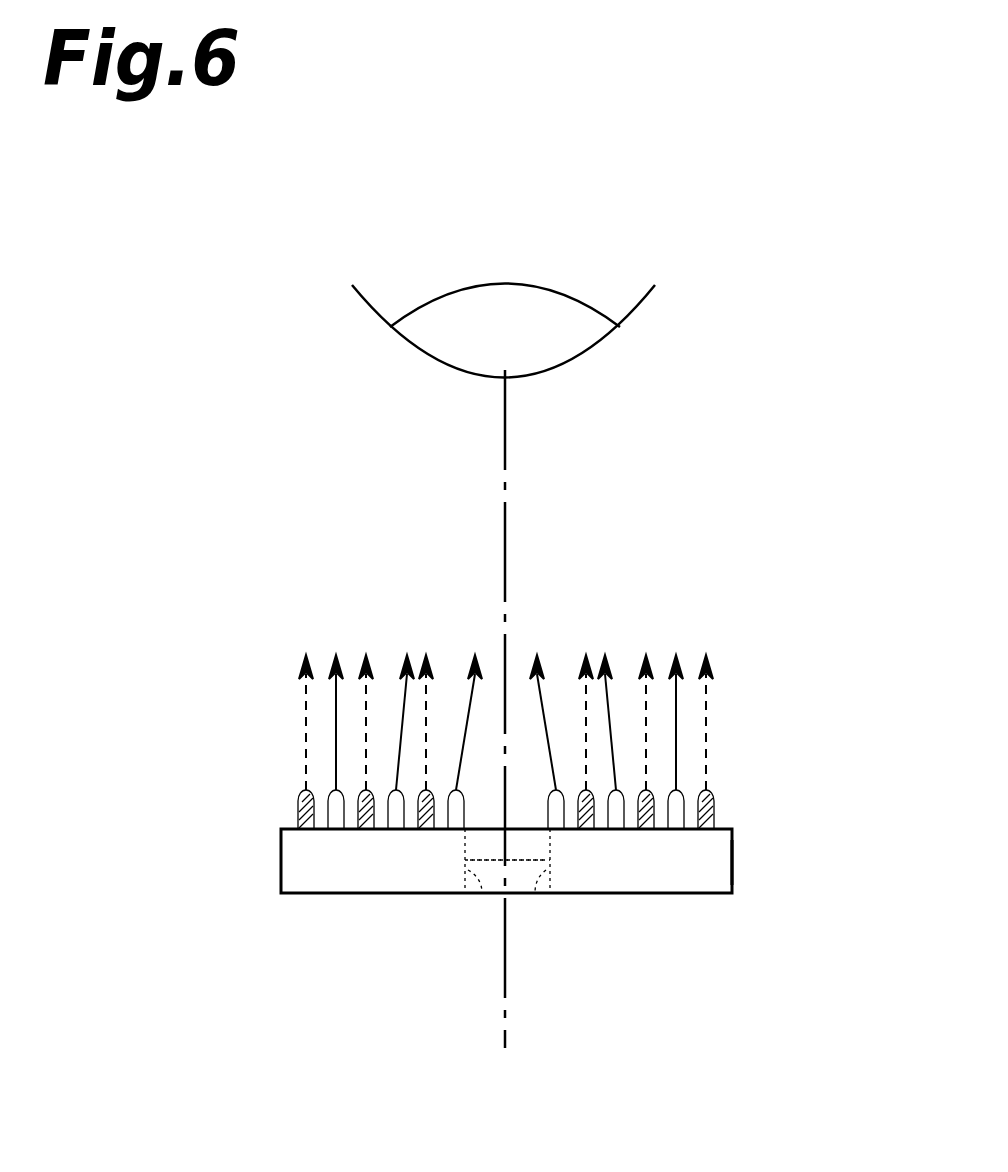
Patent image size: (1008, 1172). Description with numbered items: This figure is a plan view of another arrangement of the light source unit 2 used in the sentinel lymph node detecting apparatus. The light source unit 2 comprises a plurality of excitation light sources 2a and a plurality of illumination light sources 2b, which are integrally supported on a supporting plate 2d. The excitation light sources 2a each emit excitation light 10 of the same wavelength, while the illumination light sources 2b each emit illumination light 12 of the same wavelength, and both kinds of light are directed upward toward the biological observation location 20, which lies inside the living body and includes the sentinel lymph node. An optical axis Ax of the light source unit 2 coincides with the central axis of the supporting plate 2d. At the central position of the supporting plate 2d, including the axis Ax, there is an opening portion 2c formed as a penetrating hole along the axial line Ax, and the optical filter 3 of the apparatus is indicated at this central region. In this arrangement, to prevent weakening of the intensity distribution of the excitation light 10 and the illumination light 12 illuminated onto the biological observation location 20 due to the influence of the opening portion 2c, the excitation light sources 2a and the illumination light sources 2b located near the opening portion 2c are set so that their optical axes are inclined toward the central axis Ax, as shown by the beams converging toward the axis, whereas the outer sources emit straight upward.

The biological observation location 20 is at (528, 279).
The optical axis Ax is at (505, 435).
The excitation light 10 is at (336, 701).
The illumination light 12 is at (707, 695).
The excitation light sources 2a is at (323, 790).
The illumination light sources 2b is at (717, 800).
The light source unit 2 is at (303, 860).
The supporting plate 2d is at (713, 860).
The opening portion 2c is at (477, 893).
The optical filter 3 is at (533, 893).